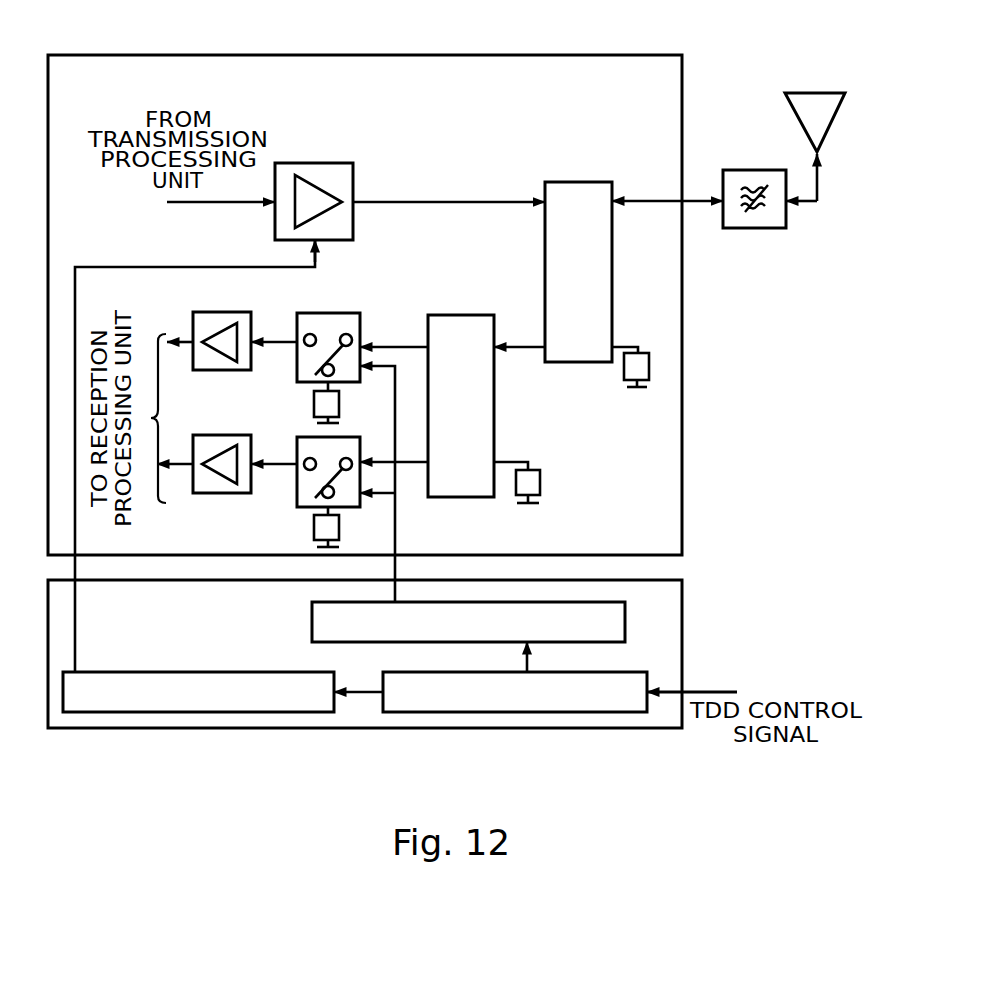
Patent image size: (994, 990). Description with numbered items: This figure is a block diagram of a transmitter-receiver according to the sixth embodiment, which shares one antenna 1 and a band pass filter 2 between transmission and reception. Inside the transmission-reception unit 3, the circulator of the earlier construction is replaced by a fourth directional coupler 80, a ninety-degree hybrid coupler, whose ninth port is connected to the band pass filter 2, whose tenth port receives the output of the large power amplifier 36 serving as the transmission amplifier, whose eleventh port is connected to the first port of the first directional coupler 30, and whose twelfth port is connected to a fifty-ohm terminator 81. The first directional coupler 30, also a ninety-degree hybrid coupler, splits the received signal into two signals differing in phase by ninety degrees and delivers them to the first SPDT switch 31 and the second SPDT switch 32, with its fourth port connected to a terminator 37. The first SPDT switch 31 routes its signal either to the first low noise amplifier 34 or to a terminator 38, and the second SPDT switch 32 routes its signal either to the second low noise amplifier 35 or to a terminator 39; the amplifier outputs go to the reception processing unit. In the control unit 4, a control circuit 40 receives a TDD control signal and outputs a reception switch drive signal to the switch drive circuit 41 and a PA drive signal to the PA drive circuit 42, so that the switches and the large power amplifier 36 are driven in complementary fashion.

The antenna 1 is at (817, 93).
The band pass filter 2 is at (758, 170).
The transmission-reception unit 3 is at (340, 55).
The control unit 4 is at (366, 728).
The first directional coupler 30 is at (445, 315).
The first SPDT switch 31 is at (350, 313).
The second SPDT switch 32 is at (300, 437).
The first low noise amplifier 34 is at (215, 312).
The second low noise amplifier 35 is at (210, 435).
The large power amplifier 36 is at (350, 163).
The terminator 37 is at (540, 485).
The terminator 38 is at (339, 410).
The terminator 39 is at (339, 530).
The control circuit 40 is at (512, 712).
The switch drive circuit 41 is at (312, 627).
The PA drive circuit 42 is at (168, 672).
The fourth directional coupler 80 is at (585, 182).
The terminator 81 is at (645, 353).